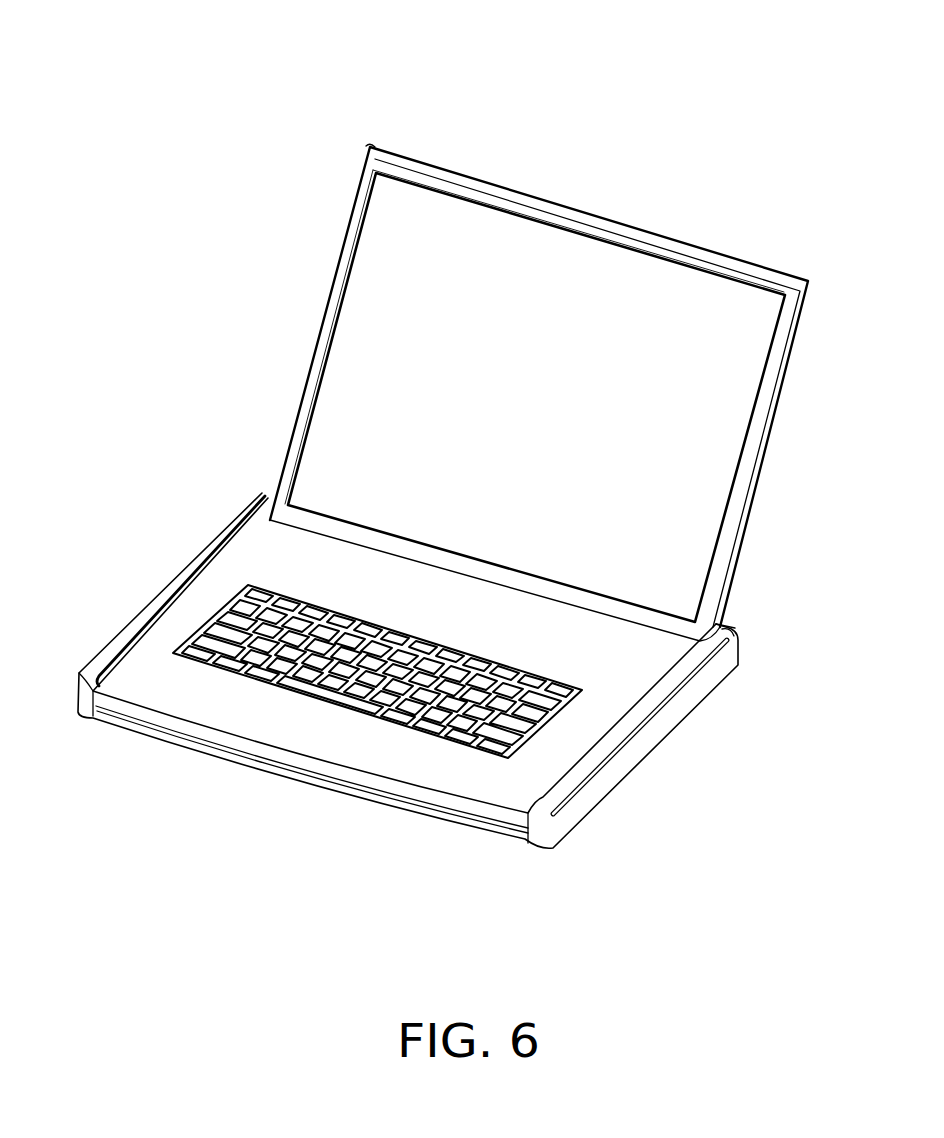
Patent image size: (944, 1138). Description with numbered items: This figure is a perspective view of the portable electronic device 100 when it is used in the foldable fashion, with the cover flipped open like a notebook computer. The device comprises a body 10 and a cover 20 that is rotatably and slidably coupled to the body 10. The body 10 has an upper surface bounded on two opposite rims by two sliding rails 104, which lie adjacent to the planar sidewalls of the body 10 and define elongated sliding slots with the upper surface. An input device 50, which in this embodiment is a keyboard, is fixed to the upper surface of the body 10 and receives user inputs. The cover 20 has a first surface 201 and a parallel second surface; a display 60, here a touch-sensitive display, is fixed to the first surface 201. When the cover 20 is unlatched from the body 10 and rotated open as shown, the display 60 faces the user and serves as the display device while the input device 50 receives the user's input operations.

The portable electronic device 100 is at (257, 61).
The body 10 is at (418, 752).
The cover 20 is at (331, 323).
The first surface 201 is at (672, 250).
The display 60 is at (360, 413).
The input device 50 is at (315, 685).
The sliding rails 104 is at (187, 577).